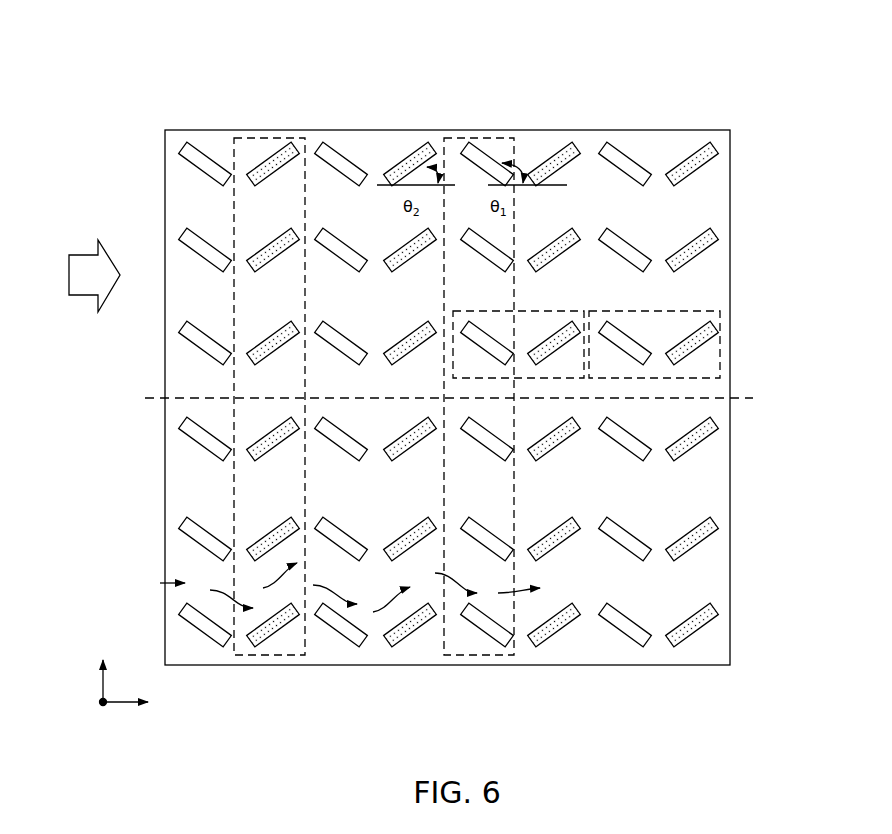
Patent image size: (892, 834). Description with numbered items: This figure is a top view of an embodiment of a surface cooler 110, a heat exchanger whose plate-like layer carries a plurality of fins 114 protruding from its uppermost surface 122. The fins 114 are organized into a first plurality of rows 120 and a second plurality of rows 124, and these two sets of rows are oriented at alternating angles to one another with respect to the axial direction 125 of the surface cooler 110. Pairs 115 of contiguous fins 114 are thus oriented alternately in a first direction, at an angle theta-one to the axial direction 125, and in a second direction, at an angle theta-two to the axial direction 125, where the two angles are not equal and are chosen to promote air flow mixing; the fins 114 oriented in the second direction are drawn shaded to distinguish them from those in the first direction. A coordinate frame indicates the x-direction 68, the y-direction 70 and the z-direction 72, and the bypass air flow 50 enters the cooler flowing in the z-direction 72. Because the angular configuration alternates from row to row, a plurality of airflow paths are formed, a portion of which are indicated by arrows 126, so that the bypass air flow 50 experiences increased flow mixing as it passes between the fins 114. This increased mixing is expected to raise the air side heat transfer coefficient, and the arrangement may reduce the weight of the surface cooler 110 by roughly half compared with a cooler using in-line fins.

The surface cooler 110 is at (200, 95).
The fins 114 is at (692, 153).
The pairs of contiguous fins 115 is at (557, 311).
The first plurality of rows 120 is at (263, 138).
The uppermost surface 122 is at (710, 482).
The second plurality of rows 124 is at (480, 138).
The axial direction 125 is at (738, 400).
The arrows 126 is at (527, 597).
The bypass air flow 50 is at (77, 296).
The x-direction 68 is at (102, 680).
The y-direction 70 is at (98, 704).
The z-direction 72 is at (130, 703).